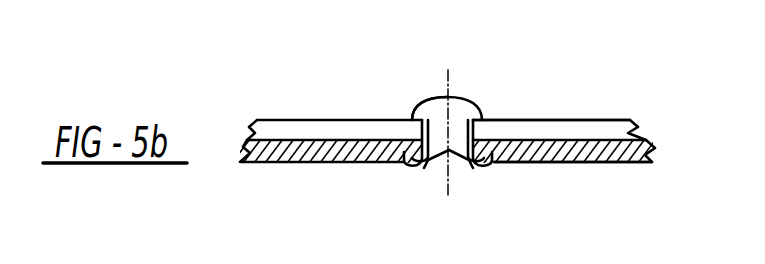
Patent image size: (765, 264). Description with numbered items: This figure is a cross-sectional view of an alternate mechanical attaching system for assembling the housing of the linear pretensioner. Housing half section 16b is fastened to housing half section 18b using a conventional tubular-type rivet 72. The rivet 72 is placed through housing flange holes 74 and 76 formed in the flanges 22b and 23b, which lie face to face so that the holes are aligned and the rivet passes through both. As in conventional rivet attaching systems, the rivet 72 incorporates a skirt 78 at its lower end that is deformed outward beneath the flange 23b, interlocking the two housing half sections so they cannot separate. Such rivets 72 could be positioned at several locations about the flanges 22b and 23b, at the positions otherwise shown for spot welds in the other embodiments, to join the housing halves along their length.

The housing half section 16b is at (598, 119).
The housing half section 18b is at (587, 163).
The flange 22b is at (345, 120).
The flange 23b is at (300, 163).
The tubular-type rivet 72 is at (471, 103).
The housing flange hole 74 is at (437, 115).
The housing flange hole 76 is at (425, 172).
The skirt 78 is at (479, 172).